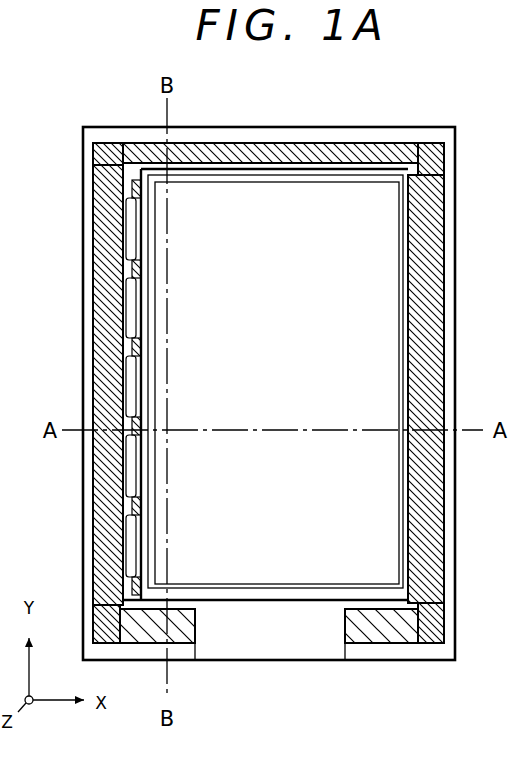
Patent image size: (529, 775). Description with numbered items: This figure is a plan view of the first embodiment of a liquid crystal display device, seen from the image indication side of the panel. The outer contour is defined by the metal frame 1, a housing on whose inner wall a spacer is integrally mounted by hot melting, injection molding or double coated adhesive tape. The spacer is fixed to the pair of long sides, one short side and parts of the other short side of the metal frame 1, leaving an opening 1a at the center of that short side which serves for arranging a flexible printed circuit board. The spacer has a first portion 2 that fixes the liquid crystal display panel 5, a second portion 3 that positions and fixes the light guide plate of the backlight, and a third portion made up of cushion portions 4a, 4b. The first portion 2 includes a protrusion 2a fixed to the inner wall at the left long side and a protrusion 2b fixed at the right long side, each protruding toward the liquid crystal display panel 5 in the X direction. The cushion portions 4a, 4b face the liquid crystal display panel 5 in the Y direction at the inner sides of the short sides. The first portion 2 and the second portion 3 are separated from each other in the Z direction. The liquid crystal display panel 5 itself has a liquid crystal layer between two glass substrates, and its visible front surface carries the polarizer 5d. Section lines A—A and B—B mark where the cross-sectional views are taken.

The metal frame 1 is at (455, 283).
The opening 1a is at (305, 648).
The first portion of the spacer 2 is at (97, 318).
The protrusion 2a is at (126, 262).
The protrusion 2b is at (445, 210).
The second portion of the spacer 3 is at (435, 153).
The cushion portion 4a is at (178, 637).
The cushion portion 4b is at (355, 148).
The liquid crystal display panel 5 is at (247, 168).
The polarizer 5d is at (282, 272).